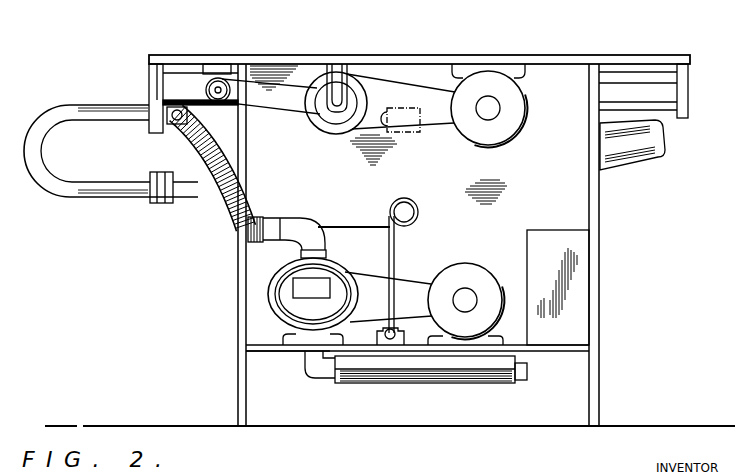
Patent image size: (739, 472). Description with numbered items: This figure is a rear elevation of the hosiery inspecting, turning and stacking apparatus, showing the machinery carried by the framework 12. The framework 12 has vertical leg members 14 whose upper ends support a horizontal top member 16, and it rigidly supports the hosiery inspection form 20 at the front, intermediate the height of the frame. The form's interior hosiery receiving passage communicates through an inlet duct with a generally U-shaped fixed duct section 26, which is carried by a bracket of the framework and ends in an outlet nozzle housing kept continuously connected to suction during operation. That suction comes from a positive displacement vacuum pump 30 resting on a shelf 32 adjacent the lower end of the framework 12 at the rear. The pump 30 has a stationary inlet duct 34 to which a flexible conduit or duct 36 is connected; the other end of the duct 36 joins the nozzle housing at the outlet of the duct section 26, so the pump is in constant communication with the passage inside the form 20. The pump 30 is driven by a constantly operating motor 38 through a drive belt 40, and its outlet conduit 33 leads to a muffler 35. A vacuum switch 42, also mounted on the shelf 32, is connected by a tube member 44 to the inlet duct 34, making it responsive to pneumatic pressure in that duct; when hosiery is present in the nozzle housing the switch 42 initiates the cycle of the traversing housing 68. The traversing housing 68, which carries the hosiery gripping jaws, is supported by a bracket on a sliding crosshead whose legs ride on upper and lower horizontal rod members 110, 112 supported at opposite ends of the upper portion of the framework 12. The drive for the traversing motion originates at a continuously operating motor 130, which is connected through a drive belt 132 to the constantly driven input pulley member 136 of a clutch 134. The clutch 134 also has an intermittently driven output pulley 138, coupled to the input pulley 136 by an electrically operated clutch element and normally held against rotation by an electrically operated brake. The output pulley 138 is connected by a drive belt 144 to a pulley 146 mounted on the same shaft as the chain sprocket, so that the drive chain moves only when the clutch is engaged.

The framework 12 is at (236, 380).
The vertical leg members 14 is at (238, 351).
The horizontal top member 16 is at (402, 55).
The hosiery inspection form 20 is at (628, 168).
The U-shaped fixed duct section 26 is at (114, 200).
The positive displacement vacuum pump 30 is at (336, 264).
The shelf 32 is at (261, 345).
The outlet conduit 33 is at (305, 376).
The stationary inlet duct 34 is at (305, 217).
The muffler 35 is at (448, 386).
The flexible conduit or duct 36 is at (228, 228).
The motor 38 is at (470, 264).
The drive belt 40 is at (398, 277).
The vacuum switch 42 is at (406, 326).
The tube member 44 is at (396, 248).
The traversing housing 68 is at (196, 119).
The upper horizontal rod member 110 is at (668, 84).
The lower horizontal rod member 112 is at (676, 104).
The continuously operating motor 130 is at (494, 145).
The drive belt 132 is at (440, 124).
The clutch 134 is at (330, 138).
The input pulley member 136 is at (382, 118).
The output pulley 138 is at (336, 112).
The drive belt 144 is at (293, 117).
The pulley 146 is at (207, 87).